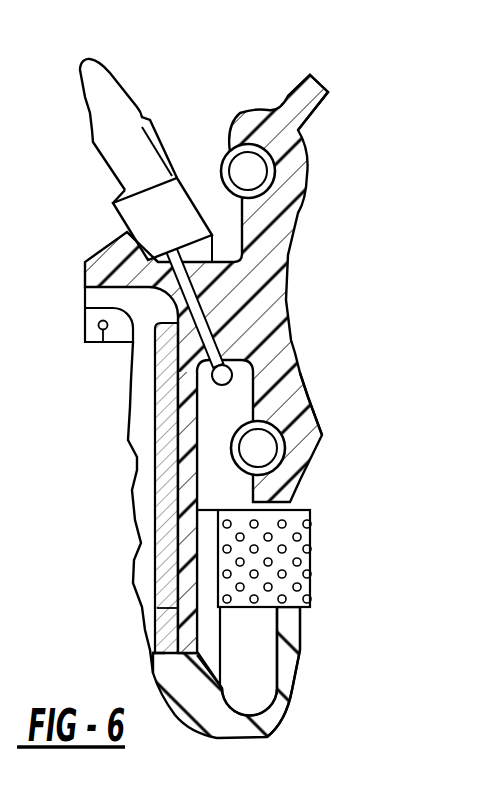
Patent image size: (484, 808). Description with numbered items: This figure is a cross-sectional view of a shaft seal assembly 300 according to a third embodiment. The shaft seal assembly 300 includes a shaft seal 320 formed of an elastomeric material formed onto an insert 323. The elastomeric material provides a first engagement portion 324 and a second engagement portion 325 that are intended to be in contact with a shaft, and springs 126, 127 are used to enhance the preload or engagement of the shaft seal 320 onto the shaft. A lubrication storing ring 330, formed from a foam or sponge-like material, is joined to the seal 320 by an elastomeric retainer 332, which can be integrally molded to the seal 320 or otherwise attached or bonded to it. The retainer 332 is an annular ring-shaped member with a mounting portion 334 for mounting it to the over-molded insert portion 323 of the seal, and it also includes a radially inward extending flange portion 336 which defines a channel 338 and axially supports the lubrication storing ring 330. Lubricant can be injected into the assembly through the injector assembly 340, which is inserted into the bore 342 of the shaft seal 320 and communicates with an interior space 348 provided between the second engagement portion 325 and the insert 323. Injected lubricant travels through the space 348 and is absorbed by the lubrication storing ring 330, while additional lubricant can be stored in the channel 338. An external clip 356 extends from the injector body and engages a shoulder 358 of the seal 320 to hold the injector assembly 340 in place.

The shaft seal assembly 300 is at (217, 416).
The shaft seal 320 is at (299, 276).
The insert 323 is at (162, 425).
The first engagement portion 324 is at (290, 96).
The second engagement portion 325 is at (306, 426).
The spring 126 is at (224, 166).
The spring 127 is at (296, 481).
The lubrication storing ring 330 is at (314, 554).
The elastomeric retainer 332 is at (302, 692).
The mounting portion 334 is at (160, 686).
The radially inward extending flange portion 336 is at (283, 636).
The channel 338 is at (255, 680).
The injector assembly 340 is at (137, 103).
The bore 342 is at (113, 233).
The interior space 348 is at (218, 452).
The external clip 356 is at (85, 287).
The shoulder 358 is at (103, 346).